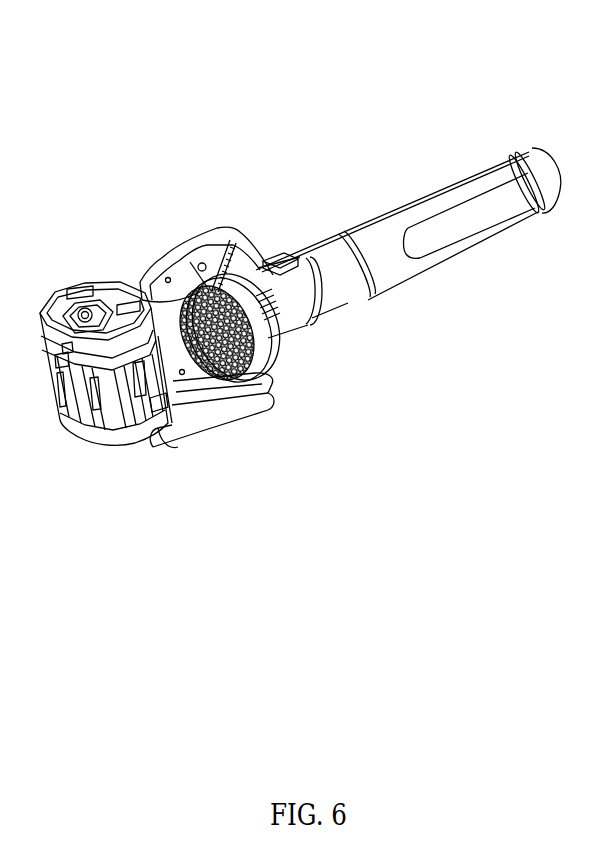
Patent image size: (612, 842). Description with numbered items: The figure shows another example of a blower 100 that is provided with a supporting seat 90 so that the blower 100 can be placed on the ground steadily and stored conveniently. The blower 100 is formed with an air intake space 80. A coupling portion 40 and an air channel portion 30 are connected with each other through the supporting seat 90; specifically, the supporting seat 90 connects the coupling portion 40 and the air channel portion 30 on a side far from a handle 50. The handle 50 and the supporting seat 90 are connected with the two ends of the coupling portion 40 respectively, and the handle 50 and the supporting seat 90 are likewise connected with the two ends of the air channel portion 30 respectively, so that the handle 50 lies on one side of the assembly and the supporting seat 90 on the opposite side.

The blower 100 is at (276, 86).
The air channel portion 30 is at (410, 200).
The handle 50 is at (177, 255).
The coupling portion 40 is at (160, 343).
The air intake space 80 is at (182, 378).
The supporting seat 90 is at (249, 413).